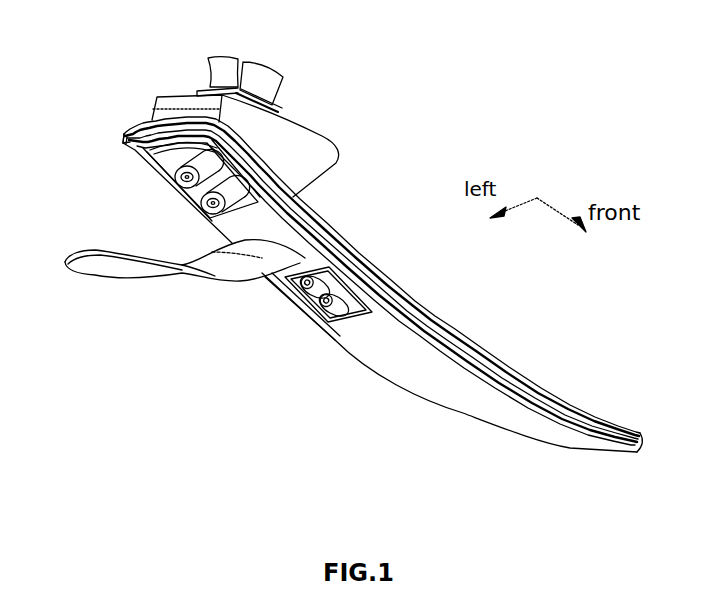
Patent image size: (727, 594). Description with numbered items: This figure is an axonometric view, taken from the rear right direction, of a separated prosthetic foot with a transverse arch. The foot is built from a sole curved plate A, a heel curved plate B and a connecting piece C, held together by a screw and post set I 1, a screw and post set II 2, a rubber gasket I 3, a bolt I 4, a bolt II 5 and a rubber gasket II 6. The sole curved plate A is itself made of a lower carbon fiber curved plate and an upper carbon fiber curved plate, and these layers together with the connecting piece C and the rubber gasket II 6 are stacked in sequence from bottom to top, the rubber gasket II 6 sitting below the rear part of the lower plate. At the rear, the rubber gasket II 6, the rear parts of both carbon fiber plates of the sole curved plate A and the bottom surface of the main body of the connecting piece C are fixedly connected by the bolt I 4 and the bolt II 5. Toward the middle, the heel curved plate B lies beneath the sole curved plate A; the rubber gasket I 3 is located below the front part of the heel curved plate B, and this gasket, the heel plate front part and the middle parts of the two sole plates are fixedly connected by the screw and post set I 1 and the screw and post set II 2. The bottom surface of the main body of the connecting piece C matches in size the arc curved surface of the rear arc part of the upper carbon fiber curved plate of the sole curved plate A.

The screw and post set I 1 is at (380, 268).
The screw and post set II 2 is at (393, 296).
The rubber gasket I 3 is at (288, 292).
The bolt I 4 is at (208, 198).
The bolt II 5 is at (187, 174).
The rubber gasket II 6 is at (163, 147).
The sole curved plate A is at (155, 110).
The heel curved plate B is at (223, 262).
The connecting piece C is at (308, 147).